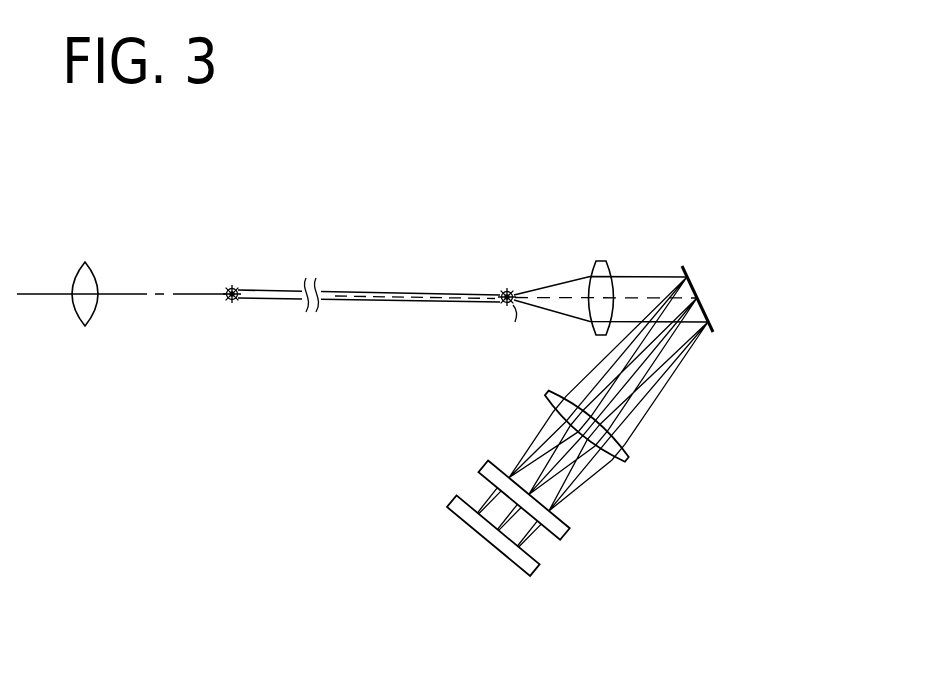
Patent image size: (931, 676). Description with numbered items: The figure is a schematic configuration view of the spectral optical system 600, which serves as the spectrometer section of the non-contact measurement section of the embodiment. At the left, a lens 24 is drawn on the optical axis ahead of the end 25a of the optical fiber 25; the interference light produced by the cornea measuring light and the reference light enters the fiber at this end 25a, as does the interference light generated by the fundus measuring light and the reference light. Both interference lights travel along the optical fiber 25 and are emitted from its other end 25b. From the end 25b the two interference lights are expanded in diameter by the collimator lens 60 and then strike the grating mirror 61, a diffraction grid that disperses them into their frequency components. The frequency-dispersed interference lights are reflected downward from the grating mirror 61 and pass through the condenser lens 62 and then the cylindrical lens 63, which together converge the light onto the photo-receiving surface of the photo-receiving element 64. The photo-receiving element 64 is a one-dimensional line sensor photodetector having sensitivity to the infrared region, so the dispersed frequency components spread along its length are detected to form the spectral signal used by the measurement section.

The lens 24 is at (86, 281).
The end of the optical fiber 25a is at (231, 289).
The optical fiber 25 is at (398, 291).
The other end of the optical fiber 25b is at (504, 291).
The collimator lens 60 is at (598, 261).
The spectral optical system 600 is at (752, 250).
The grating mirror 61 is at (714, 326).
The condenser lens 62 is at (628, 460).
The cylindrical lens 63 is at (566, 533).
The photo-receiving element 64 is at (531, 573).